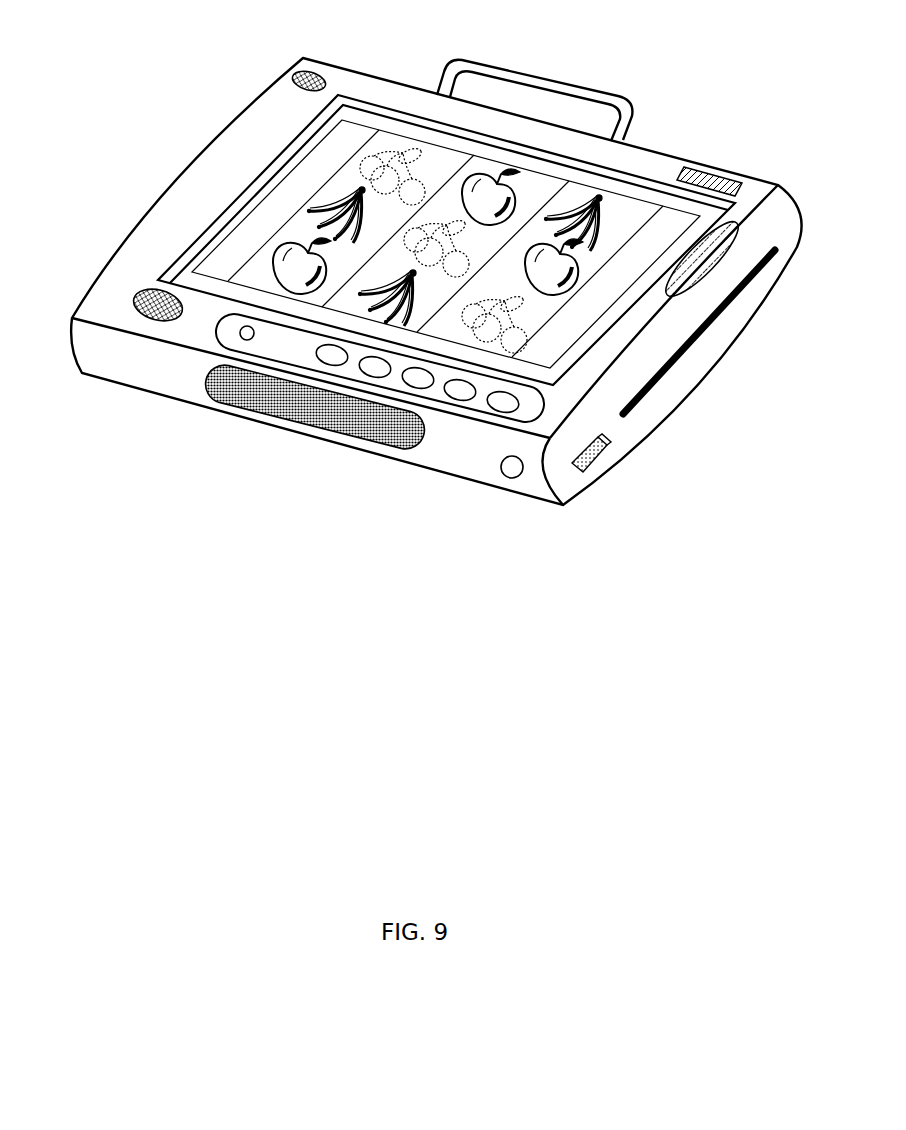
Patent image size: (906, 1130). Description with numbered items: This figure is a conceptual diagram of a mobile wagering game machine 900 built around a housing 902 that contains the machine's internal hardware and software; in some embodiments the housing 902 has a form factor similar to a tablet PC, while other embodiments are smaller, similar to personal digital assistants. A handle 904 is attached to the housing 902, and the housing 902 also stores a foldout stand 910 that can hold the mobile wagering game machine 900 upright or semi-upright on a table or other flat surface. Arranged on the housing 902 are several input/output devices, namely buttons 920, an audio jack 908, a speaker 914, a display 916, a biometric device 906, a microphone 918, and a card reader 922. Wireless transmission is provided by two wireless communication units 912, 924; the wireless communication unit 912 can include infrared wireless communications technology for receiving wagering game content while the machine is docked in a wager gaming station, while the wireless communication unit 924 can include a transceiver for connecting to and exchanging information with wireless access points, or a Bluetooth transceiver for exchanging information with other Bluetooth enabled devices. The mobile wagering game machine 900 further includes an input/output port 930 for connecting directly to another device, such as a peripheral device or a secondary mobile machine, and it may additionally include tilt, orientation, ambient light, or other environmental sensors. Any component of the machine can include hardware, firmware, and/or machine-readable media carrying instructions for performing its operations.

The mobile wagering game machine 900 is at (172, 16).
The housing 902 is at (357, 72).
The handle 904 is at (598, 88).
The biometric device 906 is at (733, 226).
The audio jack 908 is at (238, 337).
The foldout stand 910 is at (229, 412).
The wireless communication unit 912 is at (515, 480).
The speaker 914 is at (133, 300).
The display 916 is at (277, 207).
The microphone 918 is at (292, 80).
The buttons 920 is at (503, 412).
The card reader 922 is at (699, 349).
The wireless communication unit 924 is at (717, 168).
The input/output port 930 is at (596, 457).